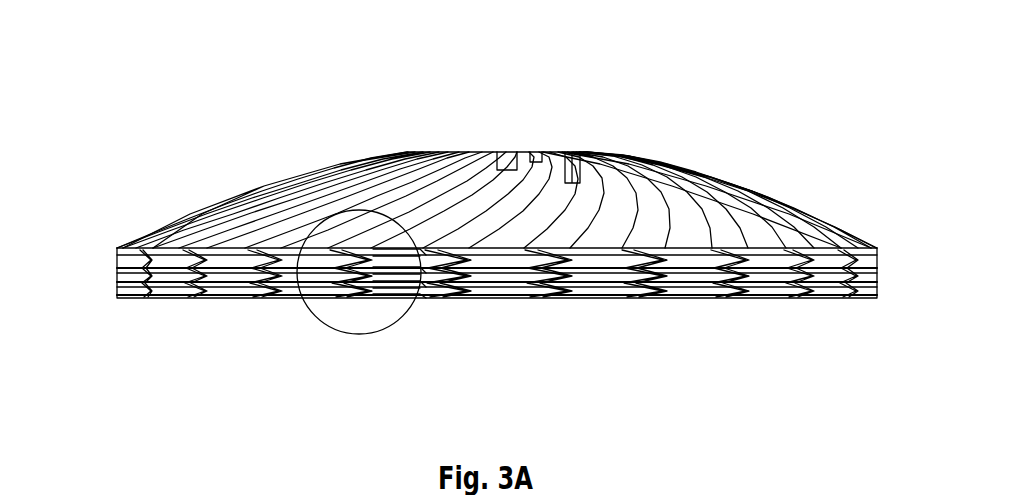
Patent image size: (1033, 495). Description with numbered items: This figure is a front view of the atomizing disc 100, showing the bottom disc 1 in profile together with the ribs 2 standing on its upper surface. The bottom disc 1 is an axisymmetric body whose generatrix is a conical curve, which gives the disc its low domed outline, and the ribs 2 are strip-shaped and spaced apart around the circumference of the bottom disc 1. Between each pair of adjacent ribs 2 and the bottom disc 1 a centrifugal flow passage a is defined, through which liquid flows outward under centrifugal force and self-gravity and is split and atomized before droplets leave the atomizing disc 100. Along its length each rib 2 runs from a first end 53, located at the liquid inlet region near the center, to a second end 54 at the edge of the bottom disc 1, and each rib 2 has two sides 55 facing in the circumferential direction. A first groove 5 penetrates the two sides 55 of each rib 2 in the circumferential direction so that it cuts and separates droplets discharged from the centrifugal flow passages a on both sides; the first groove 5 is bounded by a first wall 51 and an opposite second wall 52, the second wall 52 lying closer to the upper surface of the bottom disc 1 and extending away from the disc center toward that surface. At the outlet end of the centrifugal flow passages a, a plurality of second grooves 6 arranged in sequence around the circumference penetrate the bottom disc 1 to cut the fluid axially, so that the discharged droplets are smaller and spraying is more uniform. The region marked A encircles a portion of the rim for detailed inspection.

The atomizing disc 100 is at (497, 170).
The bottom disc 1 is at (803, 257).
The rib 2 is at (787, 358).
The centrifugal flow passage a is at (710, 358).
The second groove 6 is at (578, 358).
The side of rib 55 is at (443, 253).
The second end 54 is at (402, 385).
The first end 53 is at (553, 153).
The first groove 5 is at (163, 89).
The first wall 51 is at (278, 113).
The second wall 52 is at (220, 185).
The detail region A is at (487, 360).